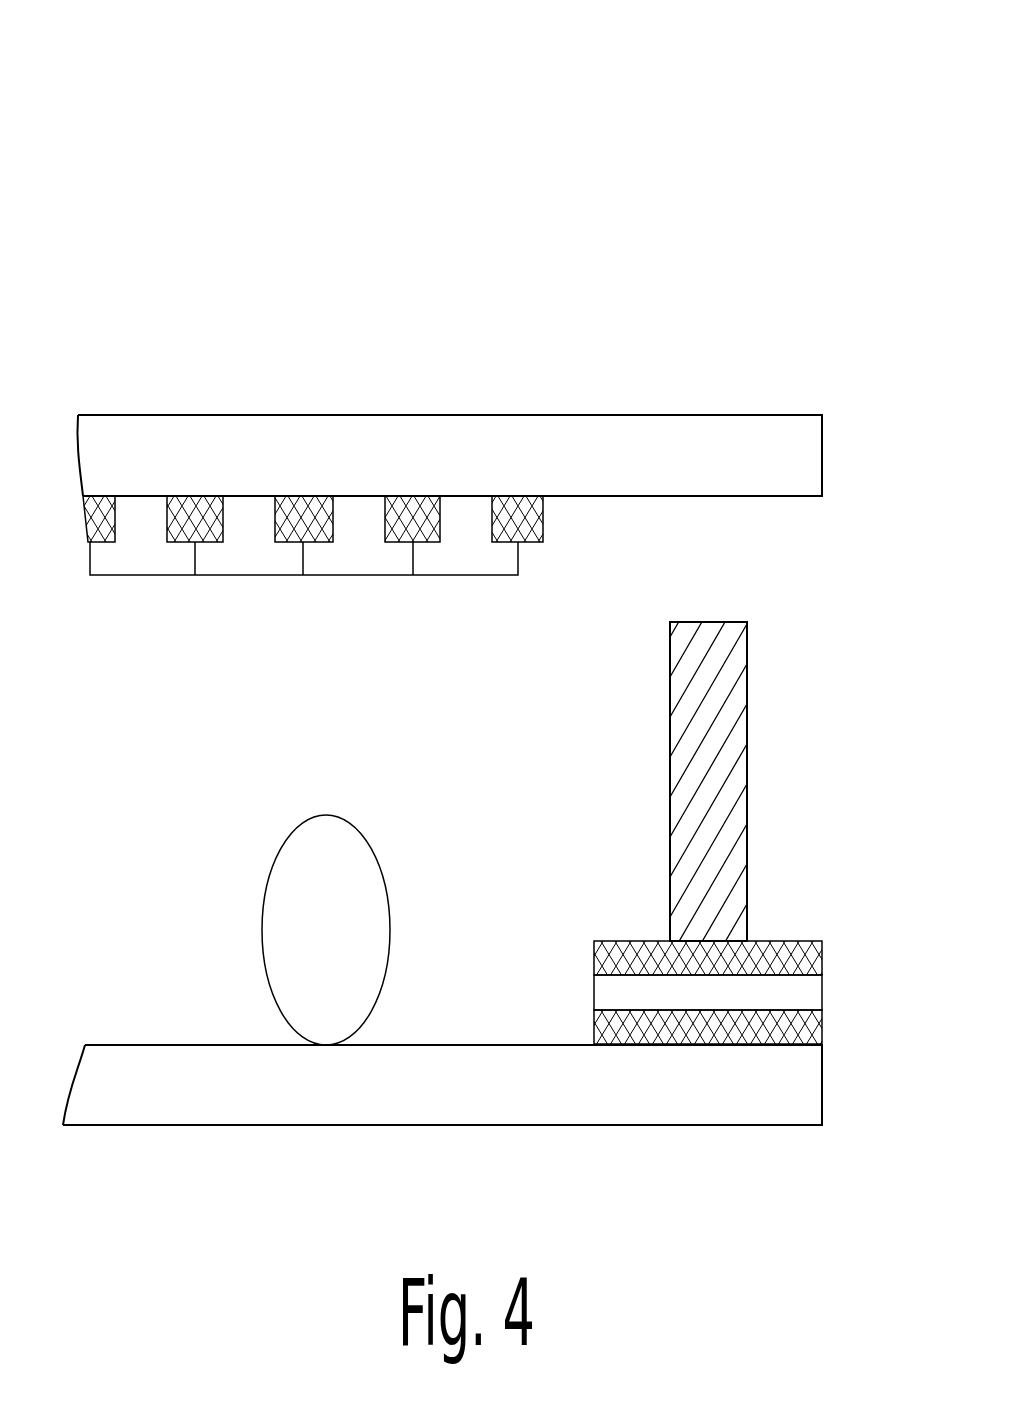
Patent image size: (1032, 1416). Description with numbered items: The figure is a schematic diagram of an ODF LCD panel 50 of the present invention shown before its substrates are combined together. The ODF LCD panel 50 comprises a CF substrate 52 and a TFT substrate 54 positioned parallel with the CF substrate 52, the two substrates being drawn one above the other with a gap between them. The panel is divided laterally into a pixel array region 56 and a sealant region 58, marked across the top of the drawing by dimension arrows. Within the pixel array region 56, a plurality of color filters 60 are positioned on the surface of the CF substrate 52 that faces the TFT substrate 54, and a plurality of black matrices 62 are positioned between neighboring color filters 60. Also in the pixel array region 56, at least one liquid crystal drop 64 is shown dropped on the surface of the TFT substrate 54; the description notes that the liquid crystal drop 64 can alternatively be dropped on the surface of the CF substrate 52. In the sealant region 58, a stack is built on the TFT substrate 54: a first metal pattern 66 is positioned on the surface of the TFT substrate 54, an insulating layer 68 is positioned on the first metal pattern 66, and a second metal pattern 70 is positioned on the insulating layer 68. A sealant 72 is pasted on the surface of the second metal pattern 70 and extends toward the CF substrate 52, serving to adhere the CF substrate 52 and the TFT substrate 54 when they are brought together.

The ODF LCD panel 50 is at (713, 72).
The CF substrate 52 is at (797, 458).
The TFT substrate 54 is at (796, 1082).
The pixel array region 56 is at (575, 400).
The sealant region 58 is at (823, 400).
The color filters 60 is at (487, 566).
The black matrices 62 is at (190, 505).
The liquid crystal drop 64 is at (365, 915).
The first metal pattern 66 is at (797, 1025).
The insulating layer 68 is at (803, 993).
The second metal pattern 70 is at (830, 940).
The sealant 72 is at (727, 790).